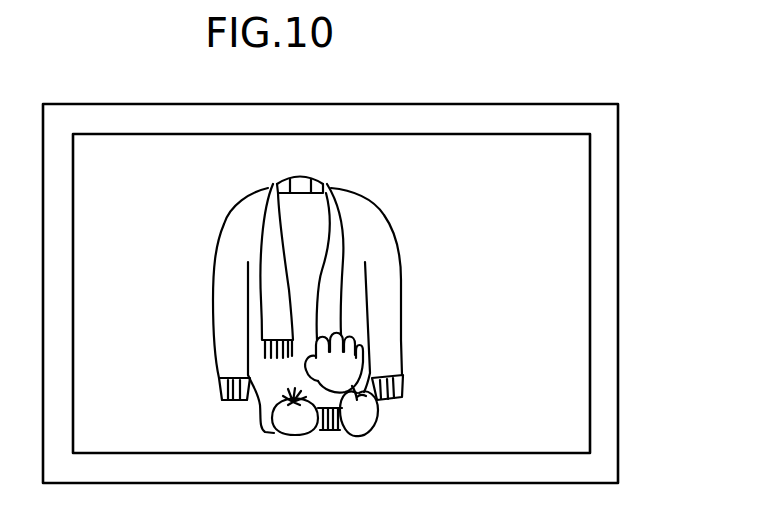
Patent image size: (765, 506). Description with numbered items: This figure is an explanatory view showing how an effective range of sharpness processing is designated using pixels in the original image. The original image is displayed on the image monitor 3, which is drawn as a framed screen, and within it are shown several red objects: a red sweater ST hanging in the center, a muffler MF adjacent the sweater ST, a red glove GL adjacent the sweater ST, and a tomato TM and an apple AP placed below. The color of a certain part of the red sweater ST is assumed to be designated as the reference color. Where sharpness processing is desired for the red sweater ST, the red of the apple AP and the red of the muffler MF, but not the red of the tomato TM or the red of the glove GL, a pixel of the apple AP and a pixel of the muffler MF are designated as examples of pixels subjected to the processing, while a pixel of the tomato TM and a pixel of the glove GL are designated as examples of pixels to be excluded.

The image monitor 3 is at (622, 221).
The red sweater ST is at (383, 217).
The muffler MF is at (261, 233).
The red glove GL is at (362, 340).
The tomato TM is at (272, 426).
The apple AP is at (377, 412).